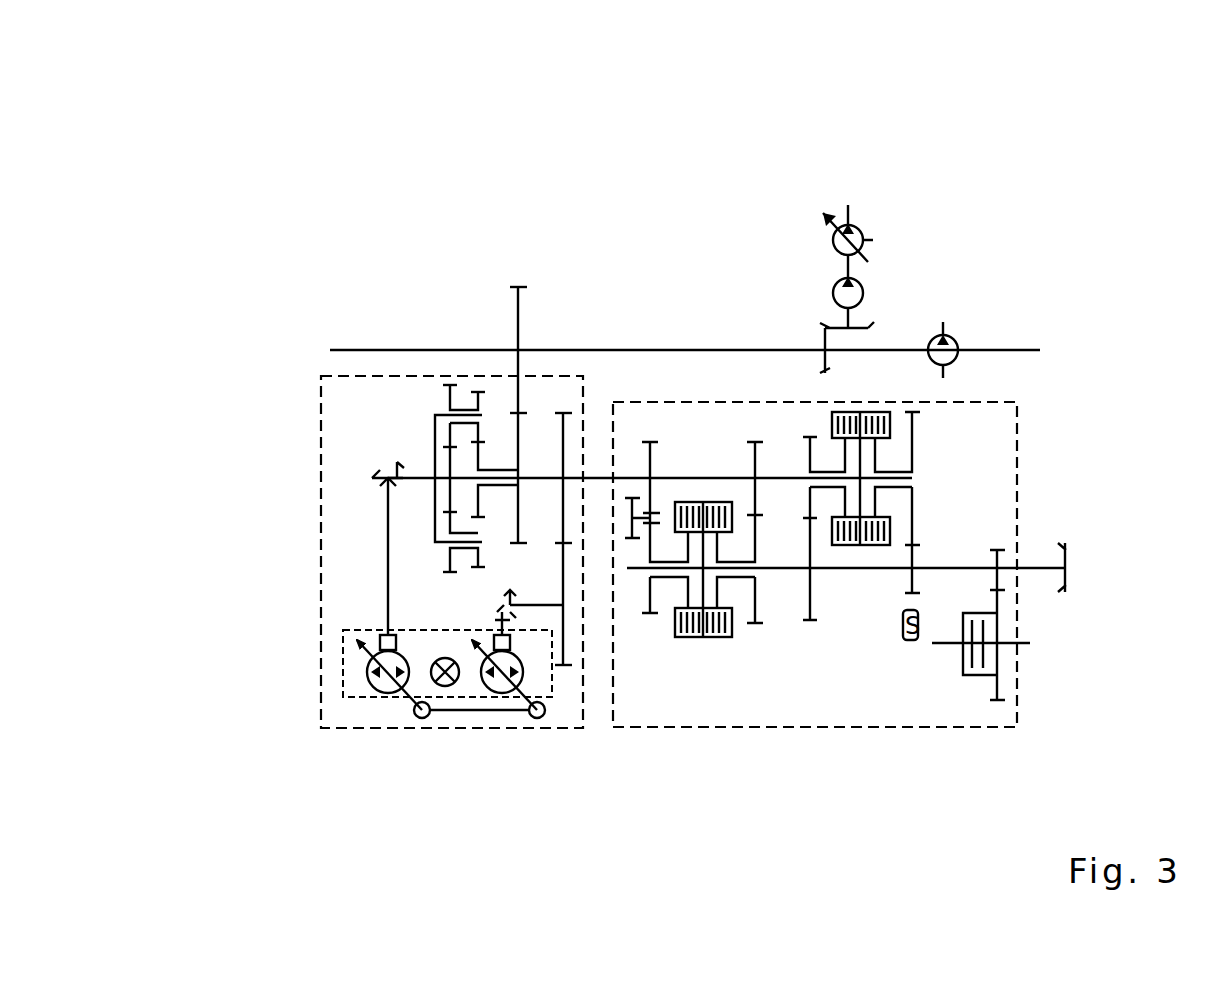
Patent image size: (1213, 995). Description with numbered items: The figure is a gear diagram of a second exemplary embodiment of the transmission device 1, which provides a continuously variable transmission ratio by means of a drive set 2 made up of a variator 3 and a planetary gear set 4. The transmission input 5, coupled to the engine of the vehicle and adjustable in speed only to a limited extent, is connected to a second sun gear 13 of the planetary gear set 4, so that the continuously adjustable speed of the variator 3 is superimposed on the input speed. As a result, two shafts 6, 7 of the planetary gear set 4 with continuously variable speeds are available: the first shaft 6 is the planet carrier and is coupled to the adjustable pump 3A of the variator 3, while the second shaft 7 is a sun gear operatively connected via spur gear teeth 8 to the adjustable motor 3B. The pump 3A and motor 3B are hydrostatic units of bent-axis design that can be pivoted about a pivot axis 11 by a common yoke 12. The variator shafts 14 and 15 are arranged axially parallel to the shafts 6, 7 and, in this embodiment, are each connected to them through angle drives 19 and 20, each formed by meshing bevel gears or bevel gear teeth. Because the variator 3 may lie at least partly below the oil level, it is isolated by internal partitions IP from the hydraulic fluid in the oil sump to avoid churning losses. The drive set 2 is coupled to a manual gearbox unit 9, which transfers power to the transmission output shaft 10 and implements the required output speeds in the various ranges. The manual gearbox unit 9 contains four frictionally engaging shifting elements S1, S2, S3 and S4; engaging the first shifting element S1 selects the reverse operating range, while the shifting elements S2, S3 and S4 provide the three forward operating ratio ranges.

The transmission device 1 is at (397, 347).
The drive set 2 is at (375, 733).
The variator 3 is at (448, 717).
The adjustable pump 3A is at (367, 668).
The adjustable motor 3B is at (483, 648).
The planetary gear set 4 is at (483, 383).
The transmission input 5 is at (464, 350).
The first shaft 6 is at (437, 413).
The second shaft 7 is at (448, 460).
The spur gear teeth 8 is at (574, 630).
The manual gearbox unit 9 is at (808, 733).
The transmission output shaft 10 is at (1033, 572).
The pivot axis 11 is at (440, 660).
The common yoke 12 is at (480, 710).
The second sun gear 13 is at (478, 462).
The variator shaft 14 is at (387, 532).
The variator shaft 15 is at (516, 612).
The angle drive 19 is at (383, 478).
The angle drive 20 is at (571, 560).
The first shifting element S1 is at (688, 500).
The shifting element S2 is at (717, 500).
The shifting element S3 is at (828, 422).
The shifting element S4 is at (880, 405).
The internal partitions IP is at (343, 678).